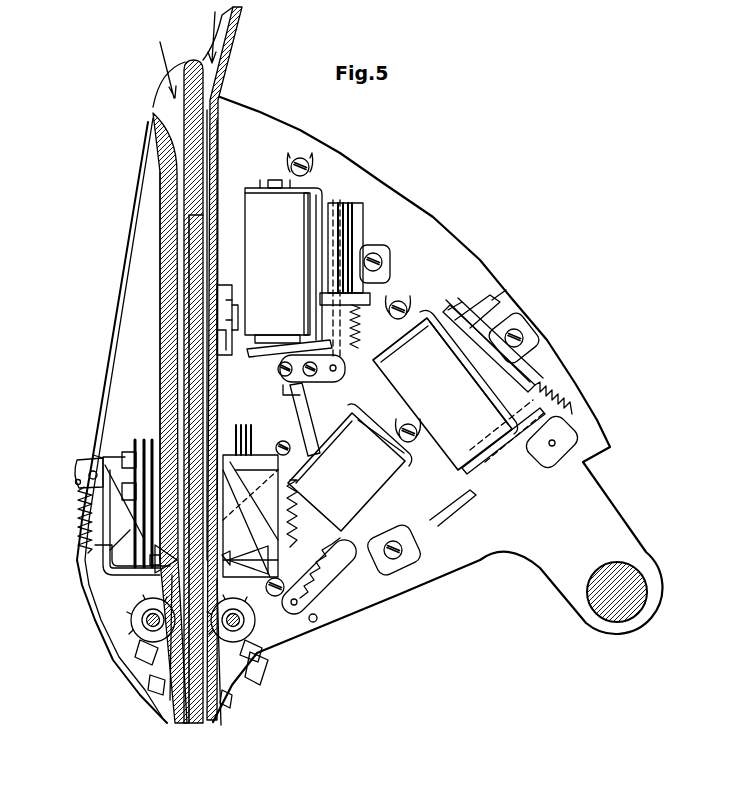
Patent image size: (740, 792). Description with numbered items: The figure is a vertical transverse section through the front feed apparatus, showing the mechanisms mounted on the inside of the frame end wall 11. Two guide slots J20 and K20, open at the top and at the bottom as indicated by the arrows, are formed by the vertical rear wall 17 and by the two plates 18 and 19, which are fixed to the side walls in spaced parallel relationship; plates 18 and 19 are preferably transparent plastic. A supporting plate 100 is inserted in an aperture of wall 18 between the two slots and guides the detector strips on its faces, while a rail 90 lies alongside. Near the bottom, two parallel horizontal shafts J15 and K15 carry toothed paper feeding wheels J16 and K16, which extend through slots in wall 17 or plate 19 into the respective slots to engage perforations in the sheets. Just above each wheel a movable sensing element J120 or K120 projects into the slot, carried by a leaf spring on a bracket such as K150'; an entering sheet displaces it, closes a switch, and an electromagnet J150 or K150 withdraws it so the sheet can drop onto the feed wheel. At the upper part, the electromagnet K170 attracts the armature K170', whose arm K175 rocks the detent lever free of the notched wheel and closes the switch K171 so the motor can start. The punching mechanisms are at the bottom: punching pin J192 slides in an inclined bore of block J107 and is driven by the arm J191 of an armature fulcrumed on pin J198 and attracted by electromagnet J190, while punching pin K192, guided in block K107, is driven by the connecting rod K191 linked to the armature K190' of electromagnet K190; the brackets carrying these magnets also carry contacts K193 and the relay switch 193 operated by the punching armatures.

The end wall 11 is at (422, 233).
The vertical rear wall 17 is at (210, 107).
The plate 18 is at (190, 143).
The plate 19 is at (165, 175).
The guide slot K20 is at (178, 208).
The supporting plate 100 is at (188, 241).
The guide slot J20 is at (205, 273).
The guide rail 90 is at (205, 349).
The electromagnet K170 is at (283, 248).
The switch K171 is at (345, 208).
The relay switch 193 is at (470, 313).
The electromagnet K190 is at (459, 383).
The armature K170' is at (287, 362).
The armature arm K175 is at (290, 397).
The bracket K150' is at (260, 433).
The electromagnet J150 is at (253, 525).
The electromagnet J190 is at (350, 467).
The connecting rod K191 is at (441, 442).
The armature K190' is at (503, 463).
The pin J198 is at (327, 588).
The movable sensing element J120 is at (312, 635).
The paper feeding wheel J16 is at (265, 623).
The shaft J15 is at (257, 650).
The armature arm J191 is at (257, 668).
The punching pin J192 is at (225, 696).
The block J107 is at (221, 727).
The contact springs K193 is at (185, 562).
The electromagnet K150 is at (94, 521).
The movable sensing element K120 is at (110, 604).
The paper feeding wheel K16 is at (135, 631).
The shaft K15 is at (124, 659).
The punching pin K192 is at (160, 687).
The block K107 is at (163, 693).